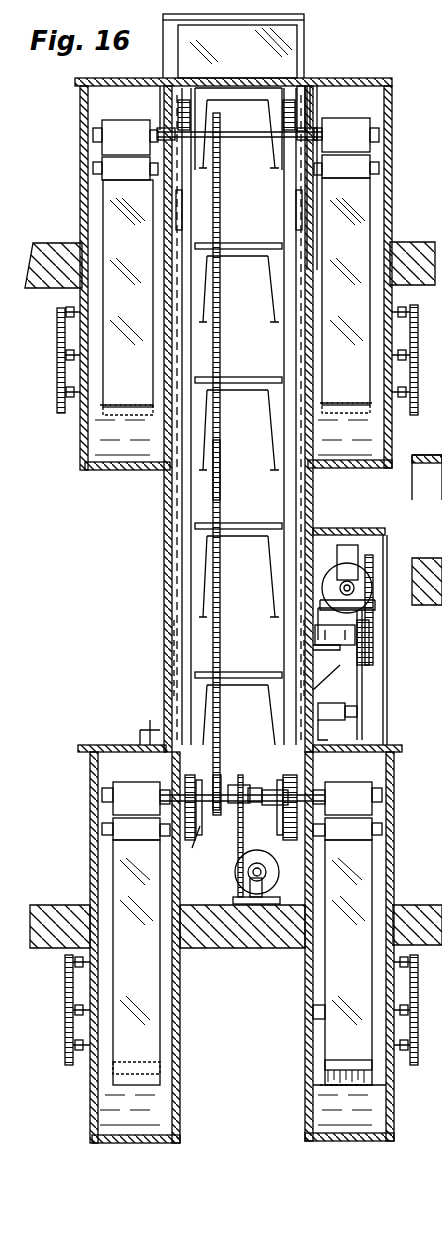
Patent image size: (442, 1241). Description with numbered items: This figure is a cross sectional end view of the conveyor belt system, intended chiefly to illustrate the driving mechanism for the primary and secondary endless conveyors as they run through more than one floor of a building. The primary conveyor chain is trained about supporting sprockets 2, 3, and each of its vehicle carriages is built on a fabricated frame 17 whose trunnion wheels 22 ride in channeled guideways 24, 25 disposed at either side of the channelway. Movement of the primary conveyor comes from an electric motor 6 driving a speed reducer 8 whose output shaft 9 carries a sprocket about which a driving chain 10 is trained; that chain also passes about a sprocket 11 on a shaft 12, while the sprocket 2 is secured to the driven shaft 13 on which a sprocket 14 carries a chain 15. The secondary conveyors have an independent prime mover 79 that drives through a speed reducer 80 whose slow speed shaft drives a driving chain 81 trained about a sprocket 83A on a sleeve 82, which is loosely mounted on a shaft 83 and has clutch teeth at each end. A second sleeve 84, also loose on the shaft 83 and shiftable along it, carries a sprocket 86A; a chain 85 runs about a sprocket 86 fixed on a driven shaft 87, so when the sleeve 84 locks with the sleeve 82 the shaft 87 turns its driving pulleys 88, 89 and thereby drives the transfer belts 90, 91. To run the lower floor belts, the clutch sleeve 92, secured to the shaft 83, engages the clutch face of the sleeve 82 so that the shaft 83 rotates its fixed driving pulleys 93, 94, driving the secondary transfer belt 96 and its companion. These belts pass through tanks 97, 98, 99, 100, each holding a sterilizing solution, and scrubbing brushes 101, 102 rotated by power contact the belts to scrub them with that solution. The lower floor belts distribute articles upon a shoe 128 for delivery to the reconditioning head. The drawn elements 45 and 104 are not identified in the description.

The supporting sprocket 2 is at (175, 652).
The supporting sprocket 3 is at (182, 200).
The electric motor 6 is at (325, 570).
The speed reducer 8 is at (358, 556).
The output shaft 9 is at (374, 565).
The driving chain 10 is at (372, 600).
The sprocket 11 is at (370, 652).
The shaft 12 is at (360, 643).
The driven shaft 13 is at (313, 692).
The sprocket 14 is at (362, 712).
The chain 15 is at (365, 682).
The fabricated frame 17 is at (240, 96).
The trunnion wheel 22 is at (178, 110).
The channeled guideway 24 is at (195, 98).
The channeled guideway 25 is at (297, 95).
The tank 45 is at (360, 878).
The secondary prime mover 79 is at (270, 864).
The speed reducer 80 is at (266, 892).
The driving chain 81 is at (238, 835).
The sleeve 82 is at (250, 804).
The shaft 83 is at (283, 775).
The sprocket 83A is at (245, 785).
The second sleeve 84 is at (195, 775).
The chain 85 is at (222, 478).
The sprocket 86 is at (220, 135).
The sprocket 86A is at (216, 812).
The driven shaft 87 is at (260, 138).
The driving pulley 88 is at (100, 150).
The driving pulley 89 is at (372, 133).
The transfer belt 90 is at (103, 205).
The transfer belt 91 is at (365, 205).
The clutch sleeve 92 is at (285, 792).
The driving pulley 93 is at (380, 810).
The driving pulley 94 is at (112, 810).
The secondary transfer belt 96 is at (118, 868).
The tank 97 is at (380, 1108).
The tank 98 is at (172, 1110).
The tank 99 is at (88, 468).
The tank 100 is at (385, 432).
The scrubbing brush 101 is at (325, 1012).
The scrubbing brush 102 is at (330, 1075).
The screen 104 is at (325, 1064).
The shoe 128 is at (441, 458).